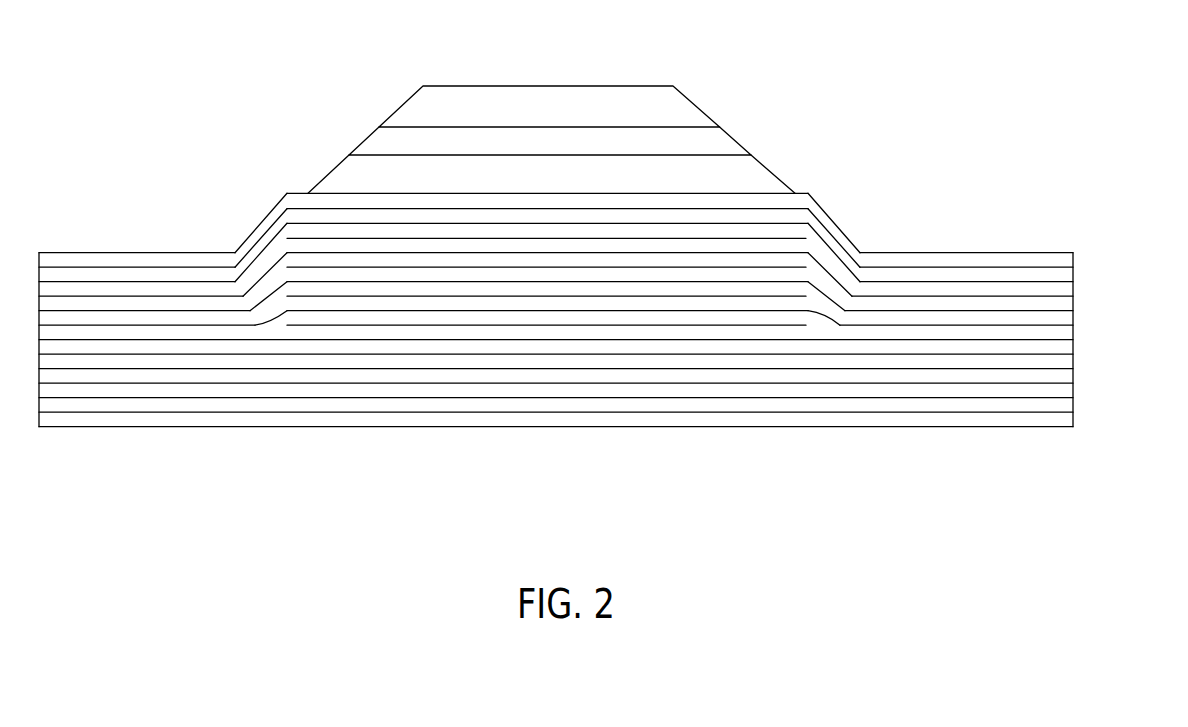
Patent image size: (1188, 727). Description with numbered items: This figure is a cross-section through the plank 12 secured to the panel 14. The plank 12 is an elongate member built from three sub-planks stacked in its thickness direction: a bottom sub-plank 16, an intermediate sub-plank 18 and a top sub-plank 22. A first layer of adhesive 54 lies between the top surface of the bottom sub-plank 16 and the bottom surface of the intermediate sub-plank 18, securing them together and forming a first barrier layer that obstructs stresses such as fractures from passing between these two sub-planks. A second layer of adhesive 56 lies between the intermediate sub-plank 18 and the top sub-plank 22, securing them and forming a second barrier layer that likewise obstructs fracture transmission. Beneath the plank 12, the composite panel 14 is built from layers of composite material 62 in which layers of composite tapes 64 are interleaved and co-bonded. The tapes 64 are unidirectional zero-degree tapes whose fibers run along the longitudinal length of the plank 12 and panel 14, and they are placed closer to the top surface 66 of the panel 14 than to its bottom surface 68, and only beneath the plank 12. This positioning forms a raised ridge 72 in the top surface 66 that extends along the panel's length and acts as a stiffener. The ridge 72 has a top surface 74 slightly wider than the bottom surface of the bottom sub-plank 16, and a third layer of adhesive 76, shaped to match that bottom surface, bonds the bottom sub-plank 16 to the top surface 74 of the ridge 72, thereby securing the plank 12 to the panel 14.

The plank 12 is at (752, 65).
The panel 14 is at (1080, 227).
The bottom sub-plank 16 is at (329, 172).
The intermediate sub-plank 18 is at (367, 137).
The top sub-plank 22 is at (405, 99).
The first layer of adhesive 54 is at (750, 155).
The second layer of adhesive 56 is at (720, 127).
The layers of composite material 62 is at (1075, 253).
The layers of composite tapes 64 is at (802, 321).
The top surface of the composite panel 66 is at (965, 253).
The bottom surface of the composite panel 68 is at (832, 413).
The raised ridge 72 is at (845, 231).
The top surface of the ridge 74 is at (298, 193).
The third layer of adhesive 76 is at (799, 193).